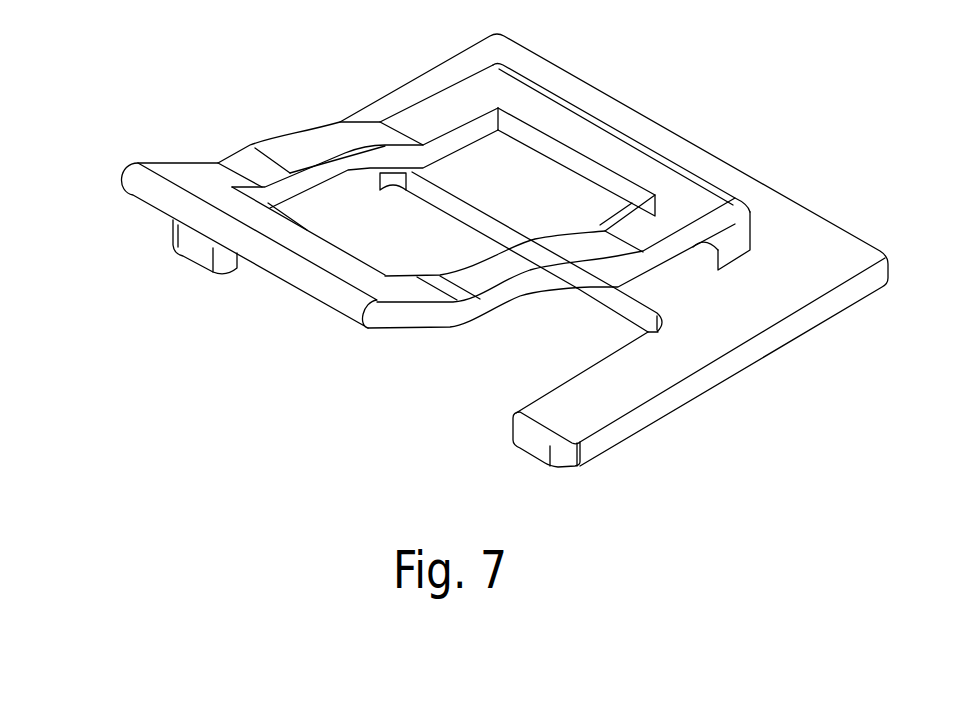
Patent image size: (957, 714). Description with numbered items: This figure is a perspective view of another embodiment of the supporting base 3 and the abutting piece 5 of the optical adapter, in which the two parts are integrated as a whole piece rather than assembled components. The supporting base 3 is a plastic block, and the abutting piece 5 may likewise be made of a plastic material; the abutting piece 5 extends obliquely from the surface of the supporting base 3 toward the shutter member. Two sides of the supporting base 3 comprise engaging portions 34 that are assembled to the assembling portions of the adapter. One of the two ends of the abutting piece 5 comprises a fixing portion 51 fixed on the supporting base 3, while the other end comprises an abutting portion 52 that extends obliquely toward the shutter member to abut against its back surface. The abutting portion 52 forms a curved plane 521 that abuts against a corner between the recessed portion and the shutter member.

The supporting base 3 is at (825, 240).
The engaging portion 34 is at (737, 362).
The abutting piece 5 is at (406, 182).
The fixing portion 51 is at (582, 138).
The abutting portion 52 is at (224, 232).
The curved plane 521 is at (292, 268).